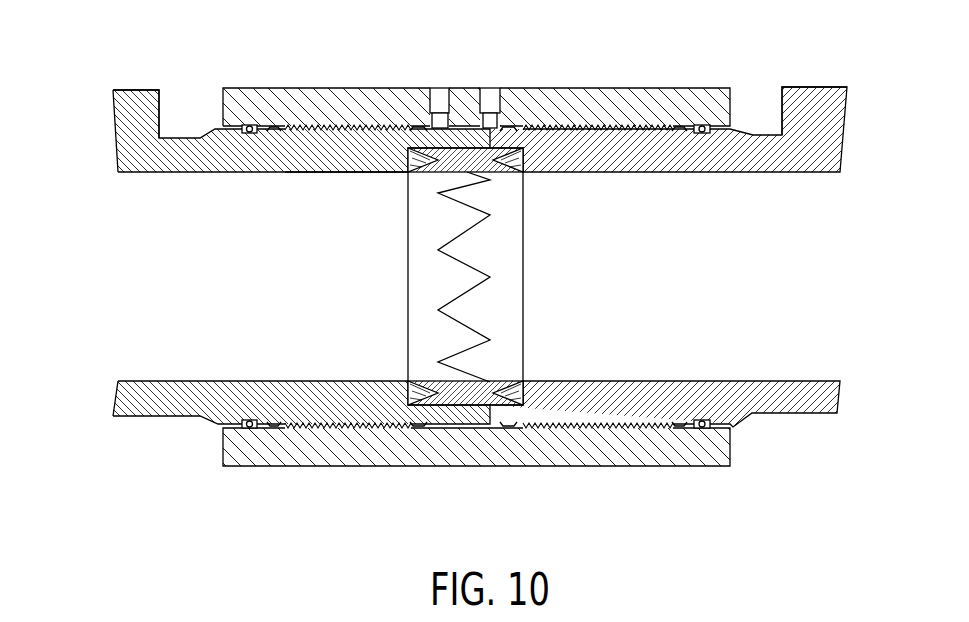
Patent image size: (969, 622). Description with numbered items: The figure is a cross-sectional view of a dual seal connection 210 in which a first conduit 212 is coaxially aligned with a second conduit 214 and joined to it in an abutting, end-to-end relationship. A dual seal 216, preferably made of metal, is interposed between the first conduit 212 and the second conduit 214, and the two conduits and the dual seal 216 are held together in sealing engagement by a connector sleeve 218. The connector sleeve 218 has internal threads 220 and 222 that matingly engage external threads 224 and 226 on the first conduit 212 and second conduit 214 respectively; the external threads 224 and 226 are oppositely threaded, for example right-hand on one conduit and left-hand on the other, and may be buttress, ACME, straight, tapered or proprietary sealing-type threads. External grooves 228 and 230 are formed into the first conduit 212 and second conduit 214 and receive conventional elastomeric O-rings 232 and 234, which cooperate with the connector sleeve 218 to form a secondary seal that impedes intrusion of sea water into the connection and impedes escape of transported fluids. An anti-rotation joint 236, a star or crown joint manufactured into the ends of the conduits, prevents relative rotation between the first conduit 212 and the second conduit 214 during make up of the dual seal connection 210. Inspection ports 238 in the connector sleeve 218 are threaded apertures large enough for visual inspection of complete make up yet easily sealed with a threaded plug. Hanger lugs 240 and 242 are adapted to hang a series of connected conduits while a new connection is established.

The dual seal connection 210 is at (570, 80).
The first conduit 212 is at (163, 408).
The second conduit 214 is at (788, 402).
The dual seal 216 is at (503, 272).
The connector sleeve 218 is at (660, 100).
The internal threads 220 is at (337, 130).
The internal threads 222 is at (608, 426).
The external threads 224 is at (318, 172).
The external threads 226 is at (608, 424).
The external groove 228 is at (251, 128).
The external groove 230 is at (703, 422).
The O-ring 232 is at (248, 426).
The O-ring 234 is at (707, 123).
The anti-rotation joint 236 is at (470, 263).
The inspection ports 238 is at (488, 95).
The hanger lug 240 is at (133, 90).
The hanger lug 242 is at (797, 113).